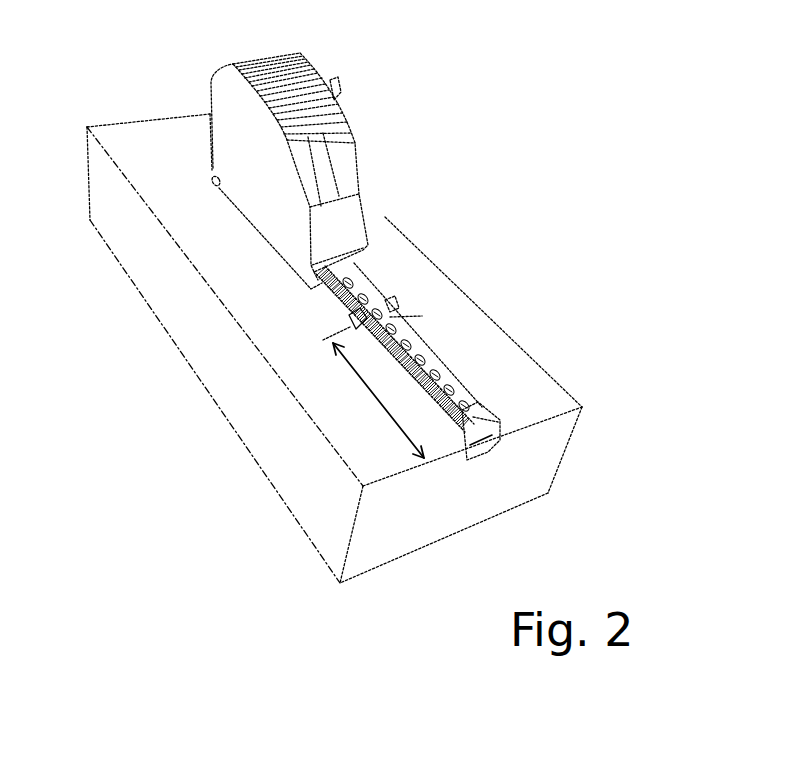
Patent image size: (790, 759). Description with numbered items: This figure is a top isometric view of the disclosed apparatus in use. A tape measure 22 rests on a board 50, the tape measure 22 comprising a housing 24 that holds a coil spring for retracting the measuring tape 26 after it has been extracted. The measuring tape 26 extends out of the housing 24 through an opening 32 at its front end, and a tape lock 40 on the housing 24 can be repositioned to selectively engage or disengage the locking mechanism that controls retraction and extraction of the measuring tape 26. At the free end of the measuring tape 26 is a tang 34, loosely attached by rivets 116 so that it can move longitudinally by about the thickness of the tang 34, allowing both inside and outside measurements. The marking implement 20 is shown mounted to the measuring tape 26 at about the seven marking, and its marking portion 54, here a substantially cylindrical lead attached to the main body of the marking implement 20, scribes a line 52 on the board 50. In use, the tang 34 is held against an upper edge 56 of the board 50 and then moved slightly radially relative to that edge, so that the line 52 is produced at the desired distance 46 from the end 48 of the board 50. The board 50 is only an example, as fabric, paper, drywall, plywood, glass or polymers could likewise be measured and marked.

The marking implement 20 is at (407, 332).
The tape measure 22 is at (347, 166).
The housing 24 is at (355, 143).
The measuring tape 26 is at (450, 368).
The opening 32 is at (355, 268).
The tang 34 is at (502, 439).
The tape lock 40 is at (370, 218).
The distance 46 is at (383, 412).
The end 48 is at (577, 432).
The board 50 is at (217, 403).
The line 52 is at (422, 316).
The marking portion 54 is at (351, 324).
The upper edge 56 is at (547, 415).
The rivets 116 is at (462, 408).